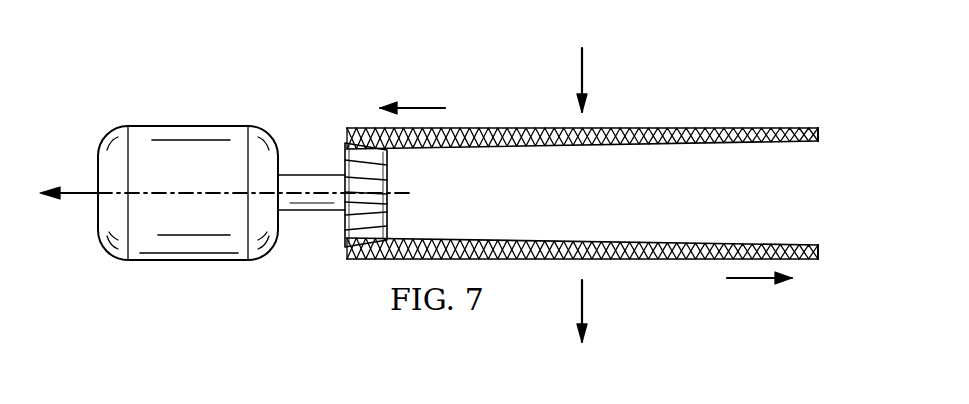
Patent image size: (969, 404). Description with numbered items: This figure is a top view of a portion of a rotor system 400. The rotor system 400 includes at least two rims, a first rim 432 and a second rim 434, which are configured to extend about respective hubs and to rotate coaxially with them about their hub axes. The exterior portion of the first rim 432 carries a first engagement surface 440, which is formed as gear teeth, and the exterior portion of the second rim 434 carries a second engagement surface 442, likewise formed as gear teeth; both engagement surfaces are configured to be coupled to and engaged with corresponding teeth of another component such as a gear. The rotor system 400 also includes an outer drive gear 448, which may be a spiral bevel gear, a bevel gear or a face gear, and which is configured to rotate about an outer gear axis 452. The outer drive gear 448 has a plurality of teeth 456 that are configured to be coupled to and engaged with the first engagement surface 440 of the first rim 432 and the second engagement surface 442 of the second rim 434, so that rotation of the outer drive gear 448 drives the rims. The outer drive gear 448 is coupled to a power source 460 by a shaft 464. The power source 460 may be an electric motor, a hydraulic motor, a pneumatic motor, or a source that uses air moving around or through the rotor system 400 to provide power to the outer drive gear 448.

The rotor system 400 is at (203, 54).
The power source 460 is at (188, 126).
The outer gear axis 452 is at (78, 188).
The shaft 464 is at (317, 212).
The outer drive gear 448 is at (343, 151).
The plurality of teeth 456 is at (384, 168).
The first rim 432 is at (792, 230).
The second engagement surface 442 is at (650, 128).
The first engagement surface 440 is at (641, 262).
The second rim 434 is at (799, 155).